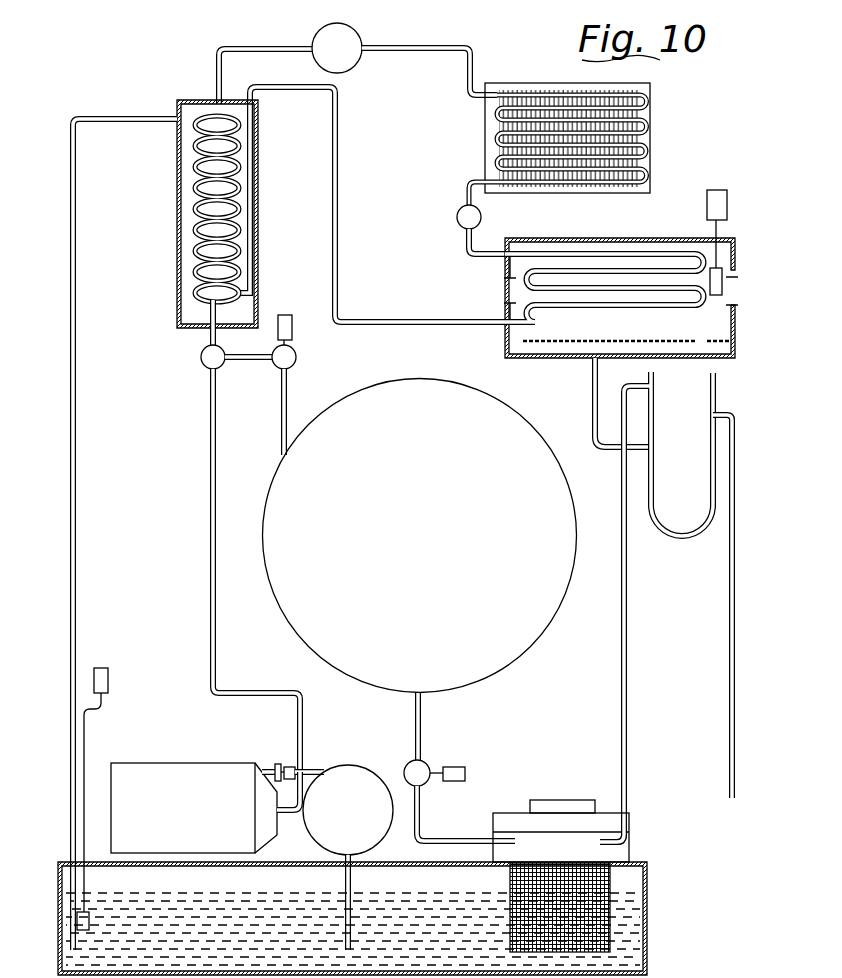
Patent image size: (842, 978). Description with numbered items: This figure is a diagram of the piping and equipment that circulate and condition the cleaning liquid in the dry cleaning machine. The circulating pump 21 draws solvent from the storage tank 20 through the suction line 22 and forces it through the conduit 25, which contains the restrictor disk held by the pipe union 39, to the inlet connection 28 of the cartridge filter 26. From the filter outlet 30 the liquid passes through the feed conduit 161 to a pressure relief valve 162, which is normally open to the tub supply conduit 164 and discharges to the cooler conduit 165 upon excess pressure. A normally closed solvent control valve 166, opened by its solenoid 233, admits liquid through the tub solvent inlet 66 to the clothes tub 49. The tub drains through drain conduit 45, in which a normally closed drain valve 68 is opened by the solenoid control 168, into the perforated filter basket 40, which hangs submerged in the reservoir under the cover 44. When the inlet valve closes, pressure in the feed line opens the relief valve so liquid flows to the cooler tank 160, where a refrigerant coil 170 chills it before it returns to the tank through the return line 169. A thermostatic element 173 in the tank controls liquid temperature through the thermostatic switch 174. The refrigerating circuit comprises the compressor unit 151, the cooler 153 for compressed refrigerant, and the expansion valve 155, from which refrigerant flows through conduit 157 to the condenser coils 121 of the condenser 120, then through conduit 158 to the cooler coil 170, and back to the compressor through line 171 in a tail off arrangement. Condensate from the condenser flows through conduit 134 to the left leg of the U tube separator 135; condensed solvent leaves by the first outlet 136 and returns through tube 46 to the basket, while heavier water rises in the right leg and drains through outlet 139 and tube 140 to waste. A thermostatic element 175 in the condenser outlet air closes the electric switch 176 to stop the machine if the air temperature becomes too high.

The storage tank 20 is at (648, 904).
The fluid pump 21 is at (346, 765).
The inlet conduit 22 is at (353, 878).
The outlet conduit 25 is at (310, 772).
The cartridge type filter 26 is at (135, 763).
The inlet connection 28 is at (268, 770).
The outlet connection 30 is at (290, 812).
The pipe union 39 is at (283, 765).
The perforated open top container 40 is at (625, 868).
The cover 44 is at (515, 813).
The drain conduit 45 is at (420, 820).
The return conduit 46 is at (627, 844).
The clothes tub 49 is at (430, 602).
The tub solvent inlet 66 is at (283, 455).
The drain valve 68 is at (410, 762).
The condenser 120 is at (602, 240).
The condenser coils 121 is at (528, 288).
The conduit 134 is at (593, 384).
The U tube separator 135 is at (716, 378).
The first outlet 136 is at (640, 386).
The outlet 139 is at (716, 413).
The tube 140 is at (735, 604).
The compressor unit 151 is at (357, 32).
The cooler 153 is at (650, 156).
The expansion valve 155 is at (457, 212).
The conduit 157 is at (465, 243).
The conduit 158 is at (338, 274).
The cooler tank 160 is at (258, 232).
The feed conduit 161 is at (212, 570).
The pressure relief valve 162 is at (202, 364).
The tub supply conduit 164 is at (250, 364).
The cooler conduit 165 is at (212, 342).
The solvent control valve 166 is at (296, 360).
The solenoid control 168 is at (464, 758).
The return line 169 is at (78, 418).
The refrigerant coil 170 is at (195, 214).
The line 171 is at (217, 70).
The thermostatic element 173 is at (88, 915).
The thermostatic switch 174 is at (108, 678).
The thermostatic element 175 is at (722, 275).
The electric switch 176 is at (727, 202).
The solenoid 233 is at (296, 320).